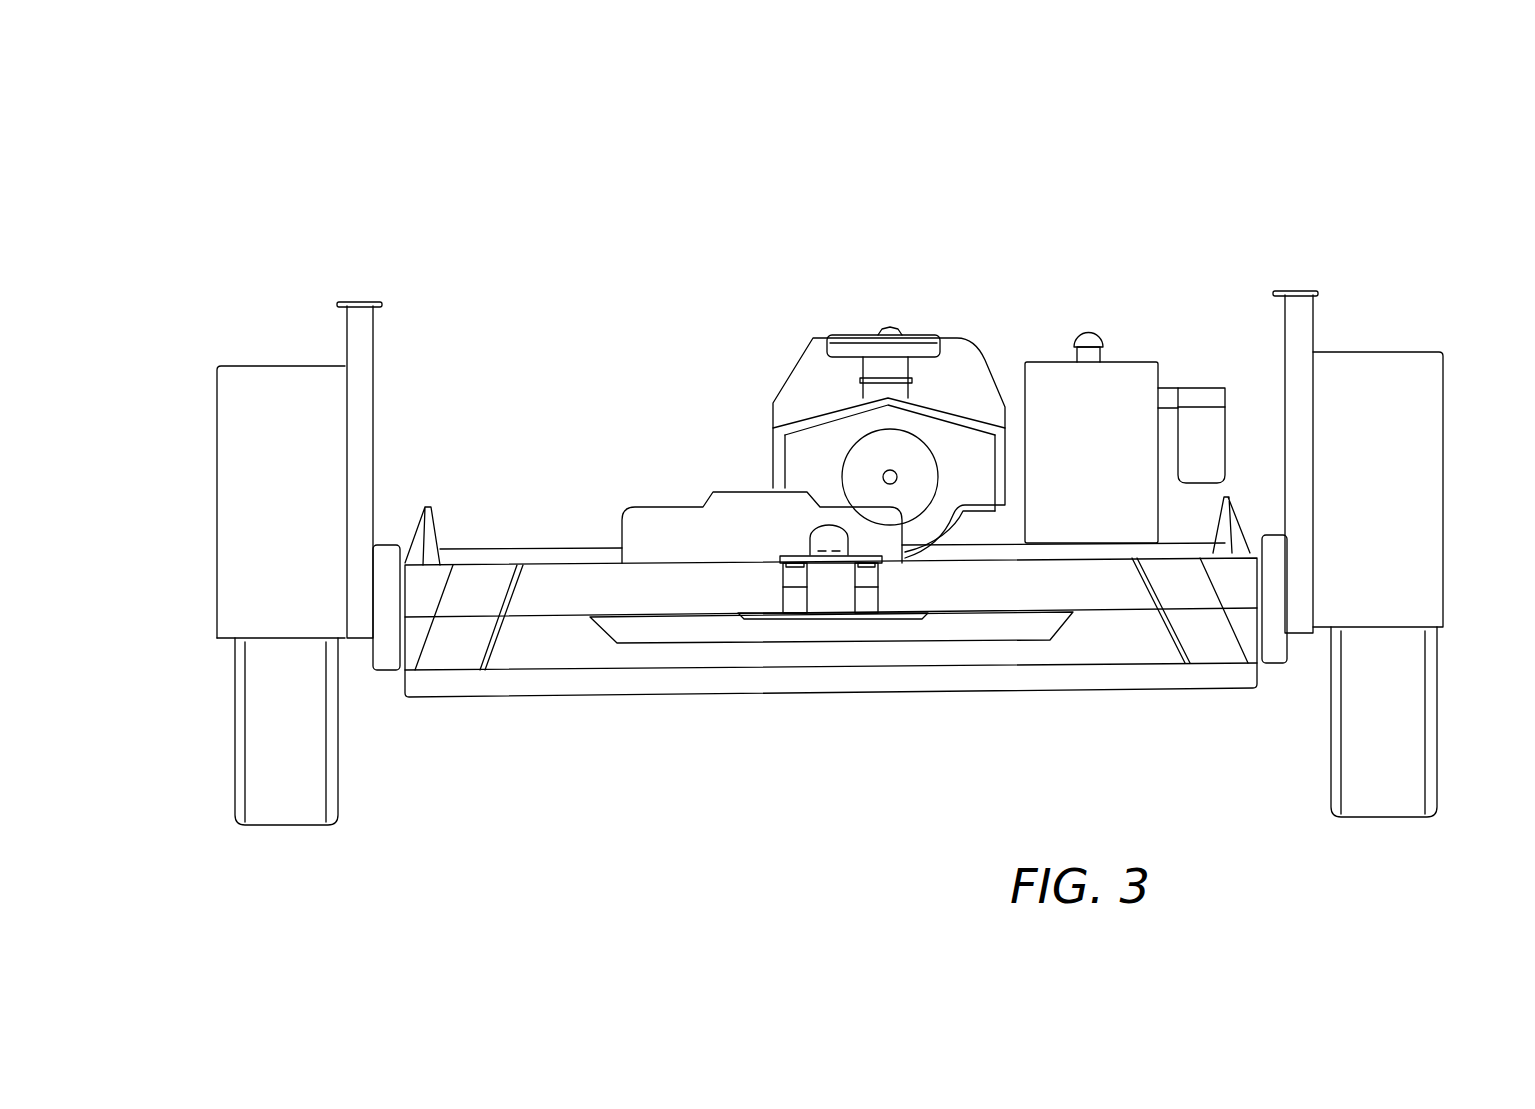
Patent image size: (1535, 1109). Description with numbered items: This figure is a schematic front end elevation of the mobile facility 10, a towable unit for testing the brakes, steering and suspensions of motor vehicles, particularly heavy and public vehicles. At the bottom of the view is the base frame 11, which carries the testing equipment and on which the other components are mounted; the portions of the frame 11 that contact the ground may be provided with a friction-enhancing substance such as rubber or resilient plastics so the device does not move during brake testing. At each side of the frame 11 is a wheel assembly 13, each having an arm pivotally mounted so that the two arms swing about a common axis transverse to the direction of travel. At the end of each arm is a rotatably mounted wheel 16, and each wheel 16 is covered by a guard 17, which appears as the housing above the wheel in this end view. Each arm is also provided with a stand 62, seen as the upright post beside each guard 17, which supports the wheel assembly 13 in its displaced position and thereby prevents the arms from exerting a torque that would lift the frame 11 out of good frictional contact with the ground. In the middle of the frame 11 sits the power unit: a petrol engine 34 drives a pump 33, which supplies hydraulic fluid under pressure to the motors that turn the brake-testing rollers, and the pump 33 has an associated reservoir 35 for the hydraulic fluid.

The mobile facility 10 is at (607, 298).
The base frame 11 is at (750, 683).
The wheel assembly 13 is at (243, 350).
The wheel 16 is at (258, 791).
The guard 17 is at (228, 608).
The pump 33 is at (1030, 272).
The petrol engine 34 is at (960, 367).
The reservoir 35 is at (1103, 390).
The stand 62 is at (368, 415).